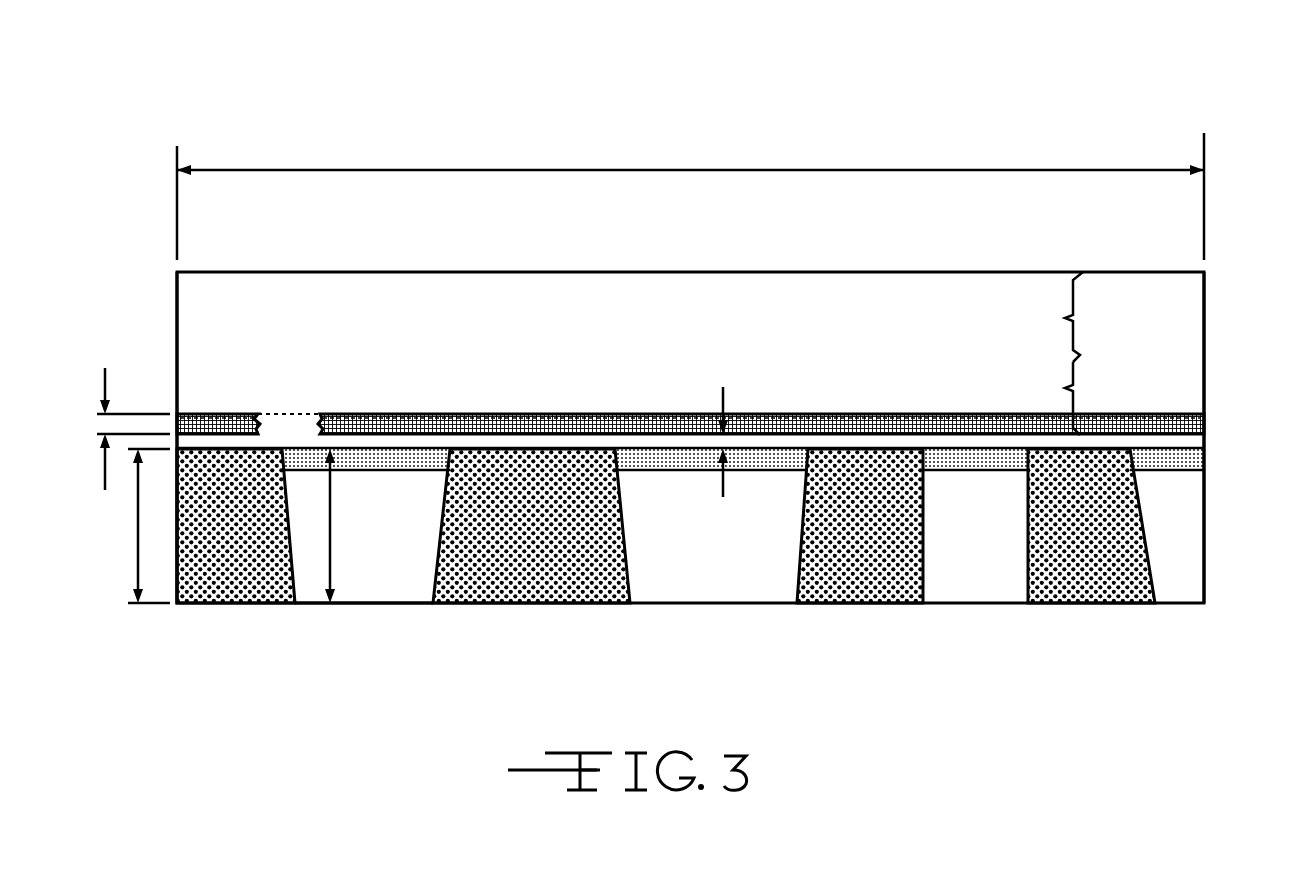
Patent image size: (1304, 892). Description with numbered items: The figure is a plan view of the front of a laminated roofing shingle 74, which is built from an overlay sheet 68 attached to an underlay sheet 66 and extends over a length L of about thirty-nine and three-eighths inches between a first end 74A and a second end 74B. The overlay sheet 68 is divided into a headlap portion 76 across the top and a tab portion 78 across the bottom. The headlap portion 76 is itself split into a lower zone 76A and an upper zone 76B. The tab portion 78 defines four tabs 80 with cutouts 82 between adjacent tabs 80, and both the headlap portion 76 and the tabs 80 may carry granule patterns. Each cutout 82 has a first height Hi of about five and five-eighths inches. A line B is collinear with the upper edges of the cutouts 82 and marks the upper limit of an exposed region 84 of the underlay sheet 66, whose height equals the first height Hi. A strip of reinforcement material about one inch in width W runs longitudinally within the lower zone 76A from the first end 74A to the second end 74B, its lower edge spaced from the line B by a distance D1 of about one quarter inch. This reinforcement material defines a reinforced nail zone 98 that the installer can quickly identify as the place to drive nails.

The underlay sheet 66 is at (285, 406).
The overlay sheet 68 is at (172, 290).
The laminated roofing shingle 74 is at (403, 122).
The first end 74A is at (177, 357).
The second end 74B is at (1207, 283).
The headlap portion 76 is at (1224, 272).
The lower zone 76A is at (1045, 398).
The upper zone 76B is at (1044, 317).
The tab portion 78 is at (1226, 428).
The tabs 80 is at (220, 575).
The cutouts 82 is at (392, 575).
The exposed region 84 is at (330, 536).
The reinforced nail zone 98 is at (75, 414).
The length L is at (1025, 170).
The width W is at (105, 378).
The first height Hi is at (138, 510).
The distance D1 is at (723, 387).
The line B is at (666, 457).